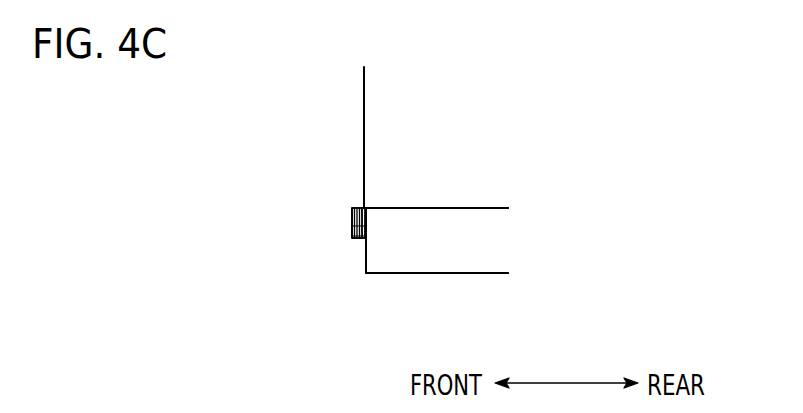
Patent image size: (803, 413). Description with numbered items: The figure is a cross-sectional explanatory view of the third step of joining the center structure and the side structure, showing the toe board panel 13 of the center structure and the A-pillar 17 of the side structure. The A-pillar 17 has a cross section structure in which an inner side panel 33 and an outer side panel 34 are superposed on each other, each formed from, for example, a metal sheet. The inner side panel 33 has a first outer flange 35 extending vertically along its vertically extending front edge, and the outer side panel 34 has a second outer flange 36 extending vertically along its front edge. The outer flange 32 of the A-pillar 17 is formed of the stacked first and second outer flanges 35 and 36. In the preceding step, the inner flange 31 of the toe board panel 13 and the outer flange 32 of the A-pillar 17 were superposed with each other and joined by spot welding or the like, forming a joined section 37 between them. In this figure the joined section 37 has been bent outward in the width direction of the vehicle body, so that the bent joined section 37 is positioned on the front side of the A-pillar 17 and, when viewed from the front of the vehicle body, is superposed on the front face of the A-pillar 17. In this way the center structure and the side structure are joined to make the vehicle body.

The toe board panel 13 is at (362, 70).
The A-pillar 17 is at (575, 205).
The inner flange 31 is at (353, 208).
The outer flange 32 is at (379, 333).
The inner side panel 33 is at (478, 211).
The outer side panel 34 is at (478, 270).
The first outer flange 35 is at (353, 240).
The second outer flange 36 is at (360, 240).
The joined section 37 is at (350, 230).